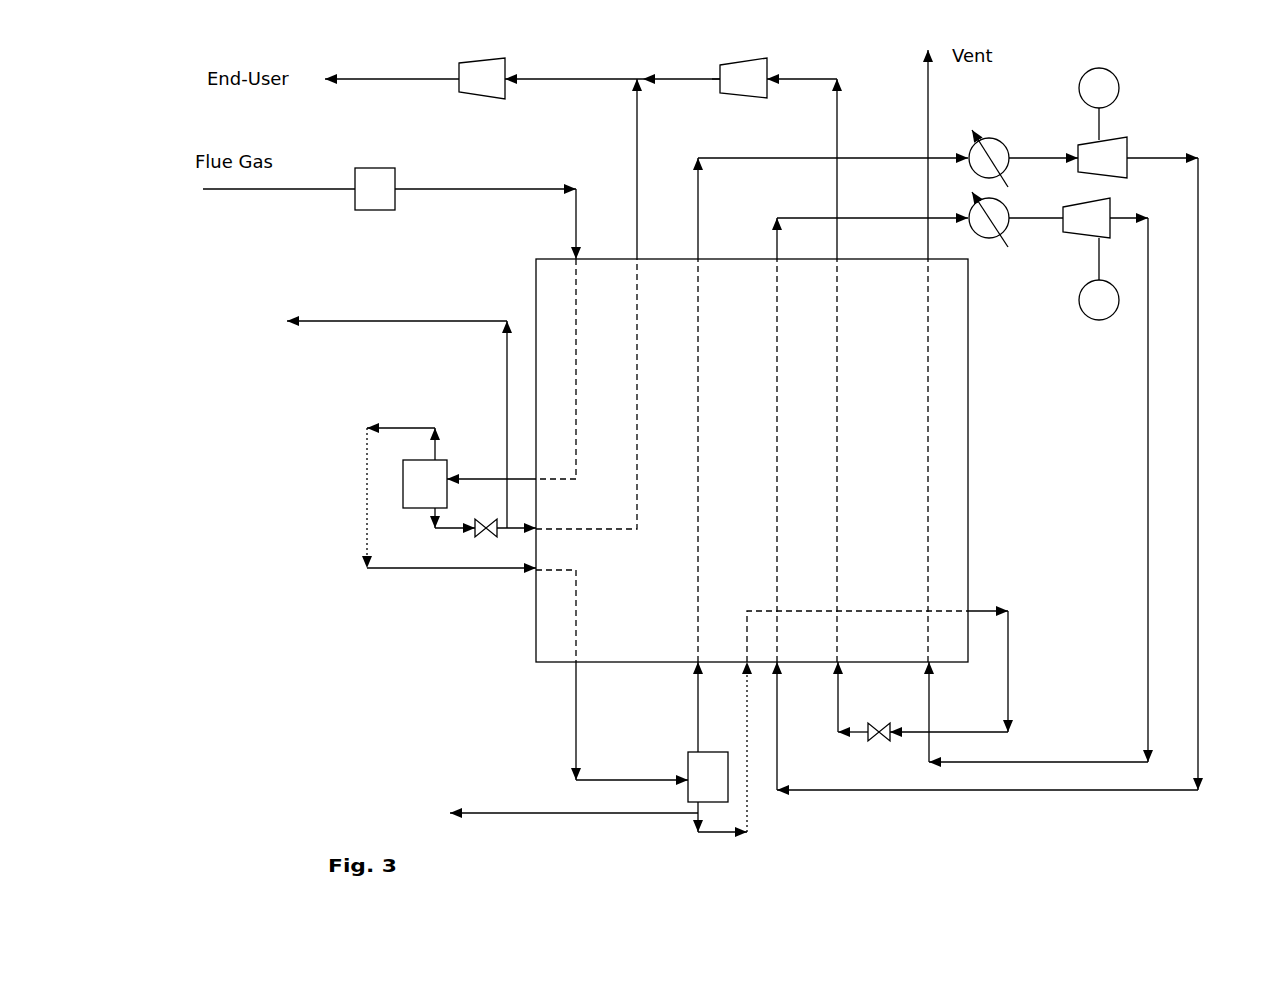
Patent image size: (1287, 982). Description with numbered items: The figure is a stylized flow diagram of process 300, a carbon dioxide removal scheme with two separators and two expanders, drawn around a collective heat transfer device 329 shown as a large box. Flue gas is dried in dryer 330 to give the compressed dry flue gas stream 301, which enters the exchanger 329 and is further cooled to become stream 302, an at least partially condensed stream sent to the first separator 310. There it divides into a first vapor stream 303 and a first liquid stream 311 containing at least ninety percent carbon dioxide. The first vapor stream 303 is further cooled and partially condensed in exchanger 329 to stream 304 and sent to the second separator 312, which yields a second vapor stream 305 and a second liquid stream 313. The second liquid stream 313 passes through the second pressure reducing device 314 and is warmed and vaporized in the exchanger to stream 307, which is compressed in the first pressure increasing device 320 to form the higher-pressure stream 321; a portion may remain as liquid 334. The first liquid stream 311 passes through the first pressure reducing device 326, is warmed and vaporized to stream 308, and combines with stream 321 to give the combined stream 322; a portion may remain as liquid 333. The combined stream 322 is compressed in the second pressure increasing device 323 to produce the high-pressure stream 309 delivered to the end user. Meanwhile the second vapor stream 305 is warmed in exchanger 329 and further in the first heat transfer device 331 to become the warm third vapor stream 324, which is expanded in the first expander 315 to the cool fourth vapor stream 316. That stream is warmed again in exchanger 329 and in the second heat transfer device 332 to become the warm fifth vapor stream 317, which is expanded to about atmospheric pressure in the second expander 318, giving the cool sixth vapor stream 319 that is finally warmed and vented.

The process 300 is at (288, 422).
The compressed dry flue gas stream 301 is at (485, 317).
The further cooled flue gas stream 302 is at (491, 466).
The first vapor stream 303 is at (471, 530).
The further cooled first vapor stream 304 is at (614, 721).
The second vapor stream 305 is at (684, 707).
The warmed and vaporized stream 307 is at (802, 391).
The warmed and vaporized first liquid stream 308 is at (611, 169).
The high-pressure stream 309 is at (392, 61).
The first separator 310 is at (425, 484).
The first liquid stream 311 is at (452, 532).
The second separator 312 is at (708, 777).
The second liquid stream 313 is at (853, 740).
The second pressure reducing device 314 is at (867, 746).
The first expander 315 is at (1102, 123).
The cool fourth vapor stream 316 is at (1009, 474).
The warm fifth vapor stream 317 is at (914, 490).
The second expander 318 is at (1091, 259).
The cool sixth vapor stream 319 is at (1038, 490).
The first pressure increasing device 320 is at (743, 78).
The higher-pressure stream 321 is at (705, 61).
The combined stream 322 is at (612, 61).
The second pressure increasing device 323 is at (482, 78).
The warm third vapor stream 324 is at (876, 396).
The first pressure reducing device 326 is at (556, 412).
The collective heat transfer device 329 is at (533, 612).
The dryer 330 is at (299, 189).
The first heat transfer device 331 is at (1000, 137).
The second heat transfer device 332 is at (997, 238).
The liquid portion of first liquid stream 333 is at (397, 408).
The liquid portion of second liquid stream 334 is at (574, 826).